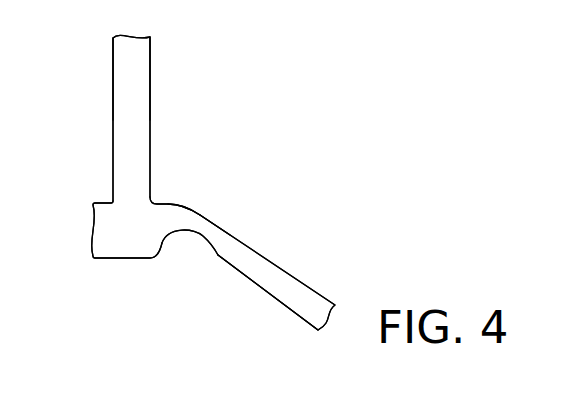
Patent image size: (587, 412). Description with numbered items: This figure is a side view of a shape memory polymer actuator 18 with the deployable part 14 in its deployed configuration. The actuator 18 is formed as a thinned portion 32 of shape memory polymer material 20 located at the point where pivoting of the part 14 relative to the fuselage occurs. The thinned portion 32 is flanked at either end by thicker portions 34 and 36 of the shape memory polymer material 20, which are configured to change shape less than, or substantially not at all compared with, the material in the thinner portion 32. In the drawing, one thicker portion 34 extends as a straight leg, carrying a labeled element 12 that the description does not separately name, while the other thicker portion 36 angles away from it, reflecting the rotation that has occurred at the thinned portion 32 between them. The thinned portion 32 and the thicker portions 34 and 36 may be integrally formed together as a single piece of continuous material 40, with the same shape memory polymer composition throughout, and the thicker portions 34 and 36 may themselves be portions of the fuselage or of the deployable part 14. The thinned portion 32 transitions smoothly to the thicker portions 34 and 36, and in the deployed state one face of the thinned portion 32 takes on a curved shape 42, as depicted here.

The first member 12 is at (125, 85).
The second member 14 is at (290, 285).
The foot portion 18 is at (152, 278).
The bend portion 20 is at (210, 227).
The outer bend surface 32 is at (177, 215).
The first leg 34 is at (135, 120).
The lower edge of second member 36 is at (298, 300).
The bracket assembly 40 is at (262, 230).
The protrusion 42 is at (207, 242).